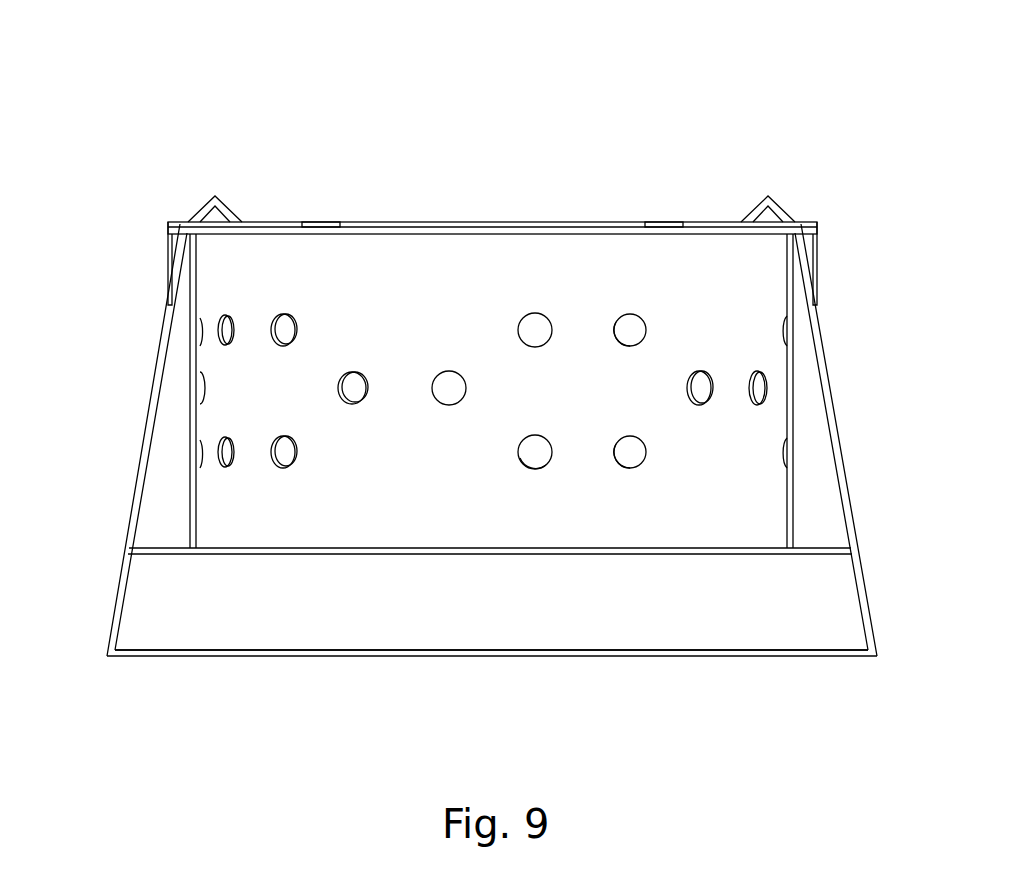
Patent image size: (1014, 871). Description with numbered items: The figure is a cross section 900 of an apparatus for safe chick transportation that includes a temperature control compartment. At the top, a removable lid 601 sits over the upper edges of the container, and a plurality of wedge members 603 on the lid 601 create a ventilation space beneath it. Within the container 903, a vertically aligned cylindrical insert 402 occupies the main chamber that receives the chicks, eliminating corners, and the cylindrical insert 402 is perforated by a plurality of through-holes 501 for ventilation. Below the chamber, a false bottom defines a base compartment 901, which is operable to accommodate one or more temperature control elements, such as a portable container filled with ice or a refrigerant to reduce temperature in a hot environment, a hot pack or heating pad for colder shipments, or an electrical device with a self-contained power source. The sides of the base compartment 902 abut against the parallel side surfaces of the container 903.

The cross section 900 is at (248, 79).
The wedge members 603 is at (235, 210).
The removable lid 601 is at (818, 257).
The cylindrical insert 402 is at (256, 416).
The through-holes 501 is at (645, 330).
The container 903 is at (120, 568).
The sides of the base compartment 902 is at (126, 598).
The base compartment 901 is at (570, 598).